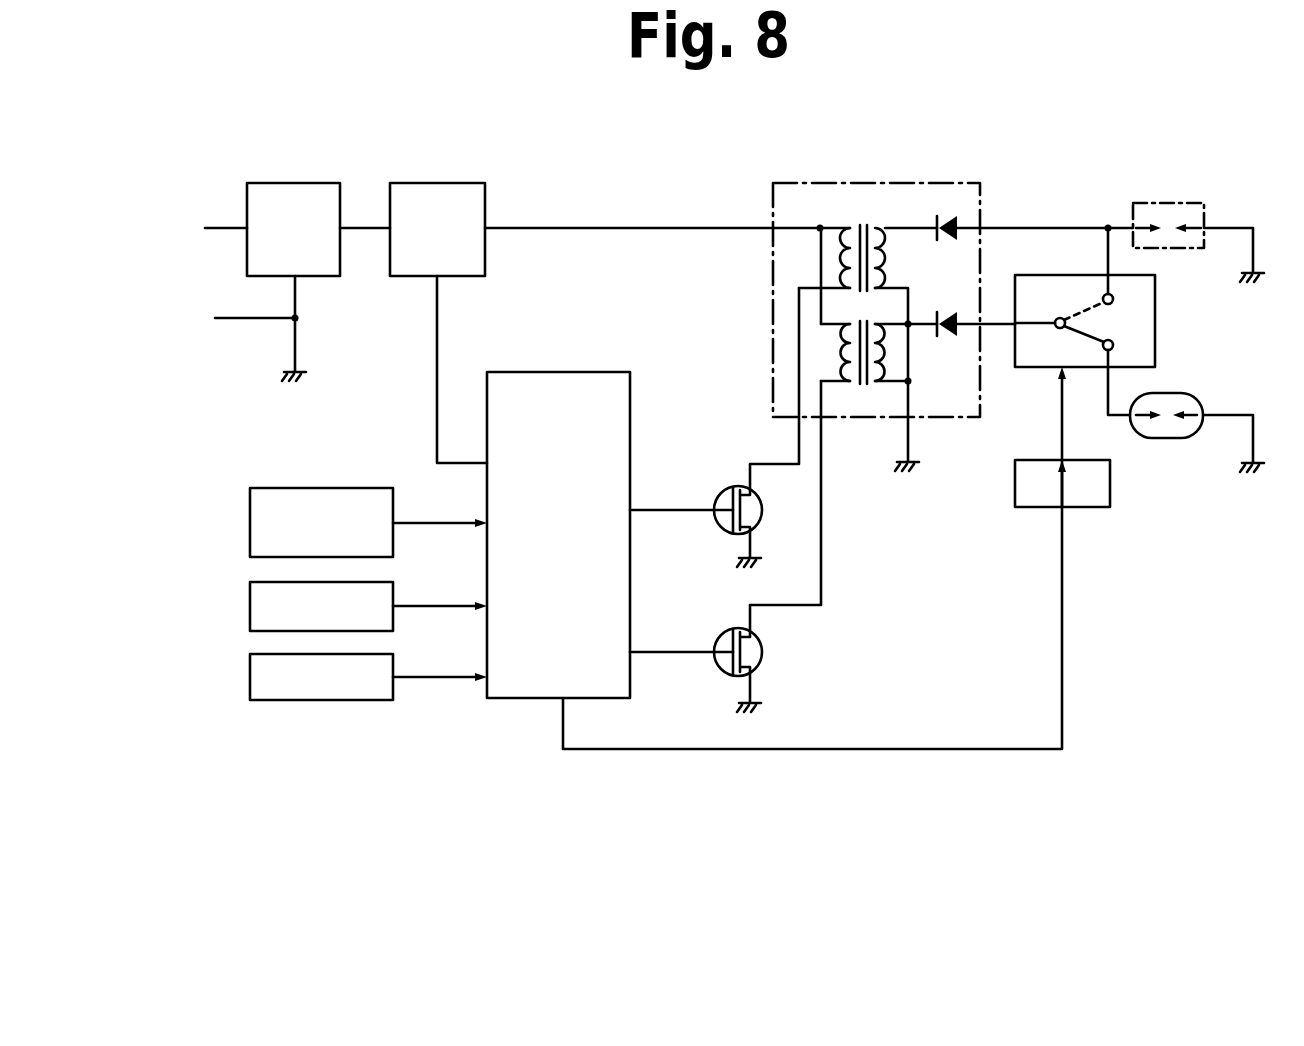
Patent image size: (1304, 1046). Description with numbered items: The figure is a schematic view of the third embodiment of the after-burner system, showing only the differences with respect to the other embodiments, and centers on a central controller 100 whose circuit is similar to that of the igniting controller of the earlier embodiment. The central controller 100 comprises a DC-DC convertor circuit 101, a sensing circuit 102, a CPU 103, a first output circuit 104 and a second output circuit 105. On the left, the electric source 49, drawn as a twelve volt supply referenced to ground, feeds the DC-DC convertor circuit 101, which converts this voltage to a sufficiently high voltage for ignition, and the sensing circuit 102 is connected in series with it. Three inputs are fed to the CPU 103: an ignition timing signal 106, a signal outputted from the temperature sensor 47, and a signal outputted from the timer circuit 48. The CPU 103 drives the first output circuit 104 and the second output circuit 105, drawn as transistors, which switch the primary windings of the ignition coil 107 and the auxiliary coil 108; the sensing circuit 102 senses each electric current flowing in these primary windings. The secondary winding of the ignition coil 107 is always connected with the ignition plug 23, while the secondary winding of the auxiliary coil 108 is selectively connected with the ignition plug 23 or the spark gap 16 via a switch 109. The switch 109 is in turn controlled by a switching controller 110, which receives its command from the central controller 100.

The spark gap 16 is at (1192, 393).
The ignition plug 23 is at (1183, 203).
The temperature sensor 47 is at (250, 598).
The timer circuit 48 is at (250, 680).
The electric source 49 is at (126, 347).
The central controller 100 is at (729, 555).
The DC-DC convertor circuit 101 is at (317, 183).
The sensing circuit 102 is at (480, 183).
The CPU 103 is at (578, 372).
The first output circuit 104 is at (713, 473).
The second output circuit 105 is at (781, 655).
The ignition timing signal 106 is at (250, 512).
The ignition coil 107 is at (861, 214).
The auxiliary coil 108 is at (862, 396).
The switch 109 is at (1155, 322).
The switching controller 110 is at (1110, 490).